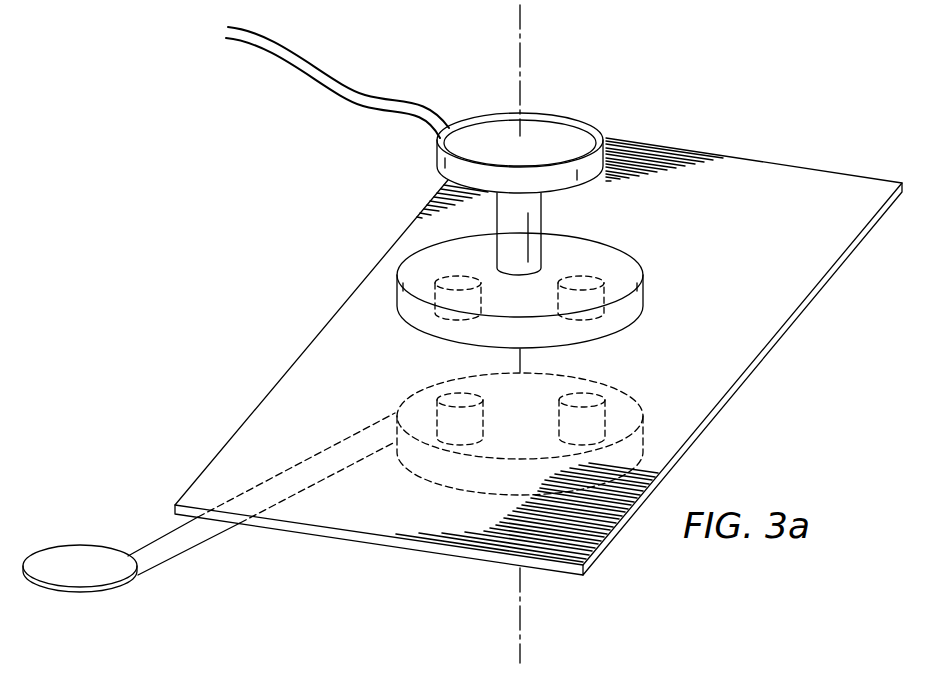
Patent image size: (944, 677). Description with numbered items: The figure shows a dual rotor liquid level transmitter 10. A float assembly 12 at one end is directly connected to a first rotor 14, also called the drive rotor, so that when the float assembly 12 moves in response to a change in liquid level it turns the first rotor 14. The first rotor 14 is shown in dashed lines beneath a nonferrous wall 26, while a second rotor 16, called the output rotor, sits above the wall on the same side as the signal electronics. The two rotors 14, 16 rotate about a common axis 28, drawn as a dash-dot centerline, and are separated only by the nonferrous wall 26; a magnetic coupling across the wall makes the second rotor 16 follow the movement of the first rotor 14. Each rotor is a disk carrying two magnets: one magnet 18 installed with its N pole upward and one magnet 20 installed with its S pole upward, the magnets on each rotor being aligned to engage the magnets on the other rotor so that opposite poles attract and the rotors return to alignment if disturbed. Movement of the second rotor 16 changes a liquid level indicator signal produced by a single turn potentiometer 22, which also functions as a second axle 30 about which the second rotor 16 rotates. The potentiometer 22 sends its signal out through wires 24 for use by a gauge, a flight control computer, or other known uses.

The liquid level transmitter 10 is at (462, 334).
The float assembly 12 is at (73, 557).
The first rotor 14 is at (420, 468).
The second rotor 16 is at (605, 258).
The N pole magnet 18 is at (413, 318).
The S pole magnet 20 is at (628, 318).
The single turn potentiometer 22 is at (565, 137).
The wires 24 is at (366, 95).
The nonferrous wall 26 is at (758, 238).
The common axis 28 is at (520, 68).
The second axle 30 is at (541, 215).